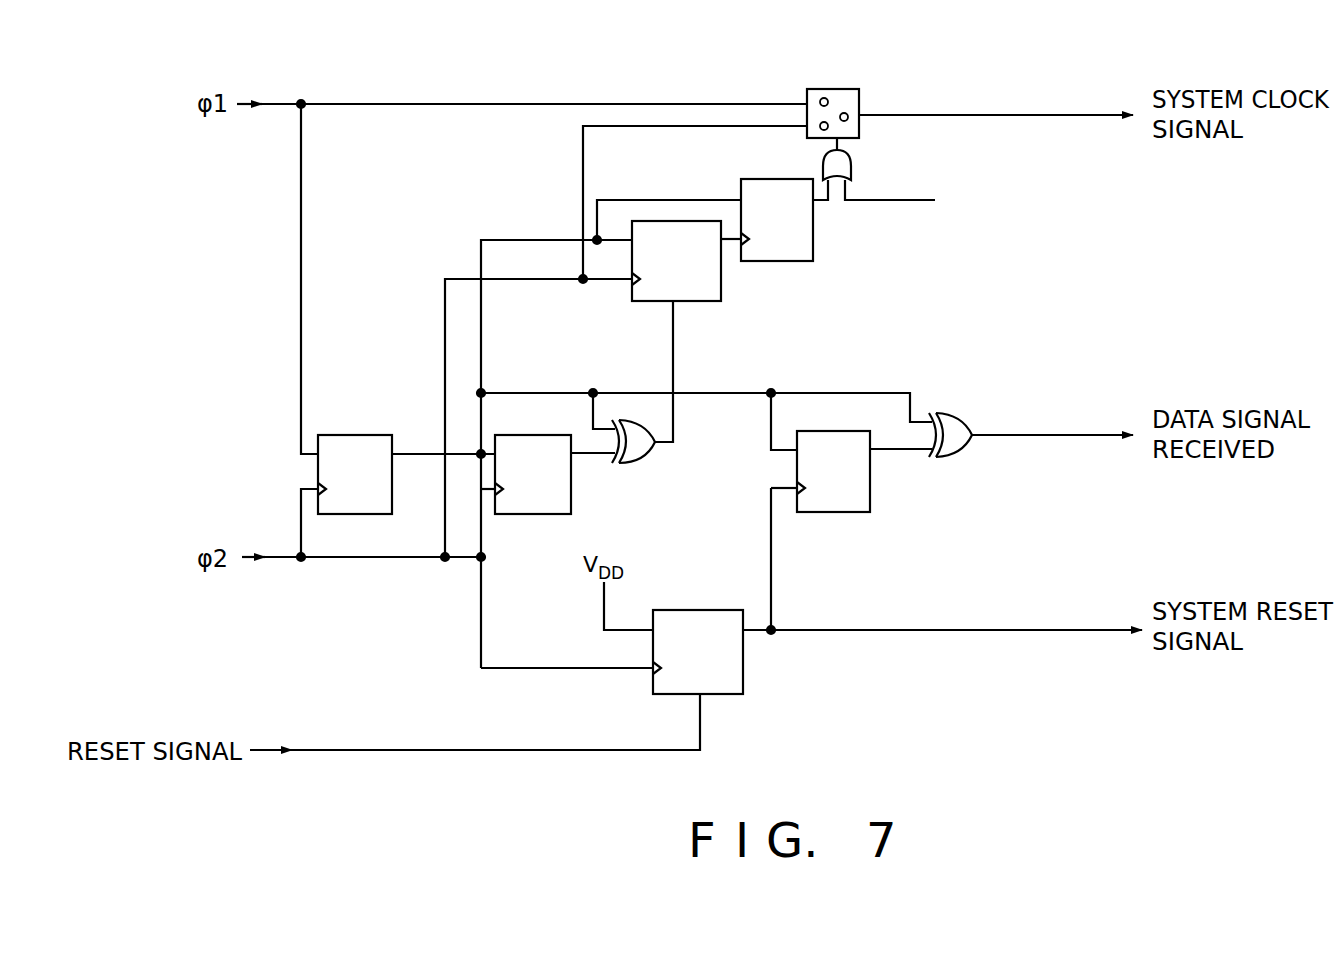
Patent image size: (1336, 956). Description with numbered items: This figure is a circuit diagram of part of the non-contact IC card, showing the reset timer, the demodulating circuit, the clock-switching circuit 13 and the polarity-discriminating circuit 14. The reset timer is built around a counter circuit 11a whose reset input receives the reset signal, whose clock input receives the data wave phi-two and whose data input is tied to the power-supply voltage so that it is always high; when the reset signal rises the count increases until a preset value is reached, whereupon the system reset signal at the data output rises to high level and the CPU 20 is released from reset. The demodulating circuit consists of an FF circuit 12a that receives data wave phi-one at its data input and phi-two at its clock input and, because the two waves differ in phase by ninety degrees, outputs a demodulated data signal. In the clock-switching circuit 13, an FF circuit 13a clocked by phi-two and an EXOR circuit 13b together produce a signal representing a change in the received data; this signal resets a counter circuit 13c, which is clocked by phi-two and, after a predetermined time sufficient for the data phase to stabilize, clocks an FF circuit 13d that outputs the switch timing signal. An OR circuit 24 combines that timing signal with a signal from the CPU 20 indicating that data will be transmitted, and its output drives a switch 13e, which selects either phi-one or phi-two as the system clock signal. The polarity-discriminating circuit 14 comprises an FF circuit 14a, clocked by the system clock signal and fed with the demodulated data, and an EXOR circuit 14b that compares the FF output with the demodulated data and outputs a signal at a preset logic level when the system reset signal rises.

The counter circuit 11a is at (743, 689).
The flip-flop circuit 12a is at (352, 434).
The clock-switching circuit 13 is at (850, 78).
The FF circuit 13a is at (571, 510).
The exclusive OR circuit 13b is at (645, 461).
The counter circuit 13c is at (721, 296).
The FF circuit 13d is at (813, 254).
The switch 13e is at (859, 133).
The polarity-discriminating circuit 14 is at (910, 375).
The FF circuit 14a is at (870, 505).
The EXOR circuit 14b is at (962, 415).
The CPU 20 is at (986, 200).
The OR circuit 24 is at (823, 165).